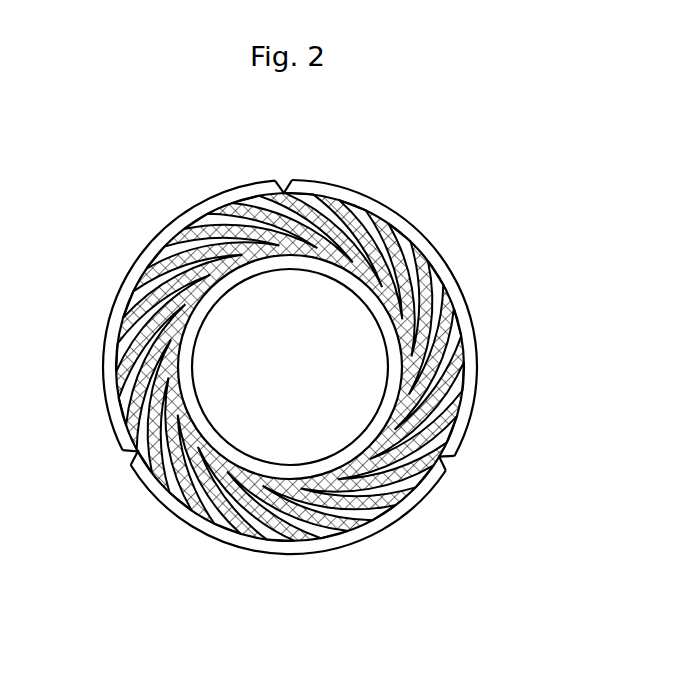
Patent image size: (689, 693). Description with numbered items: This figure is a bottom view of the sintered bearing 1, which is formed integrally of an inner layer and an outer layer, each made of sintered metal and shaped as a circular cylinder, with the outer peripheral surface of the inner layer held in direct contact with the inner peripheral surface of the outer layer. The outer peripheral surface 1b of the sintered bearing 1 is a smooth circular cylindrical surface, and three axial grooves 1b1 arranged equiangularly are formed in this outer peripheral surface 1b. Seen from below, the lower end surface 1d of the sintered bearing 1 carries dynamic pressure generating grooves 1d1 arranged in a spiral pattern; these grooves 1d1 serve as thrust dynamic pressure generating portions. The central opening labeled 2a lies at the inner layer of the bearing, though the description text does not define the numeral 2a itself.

The sintered bearing 1 is at (303, 338).
The outer peripheral surface 1b is at (478, 380).
The axial grooves 1b1 is at (287, 188).
The lower end surface 1d is at (412, 250).
The dynamic pressure generating grooves 1d1 is at (223, 219).
The shaft hole 2a is at (260, 462).